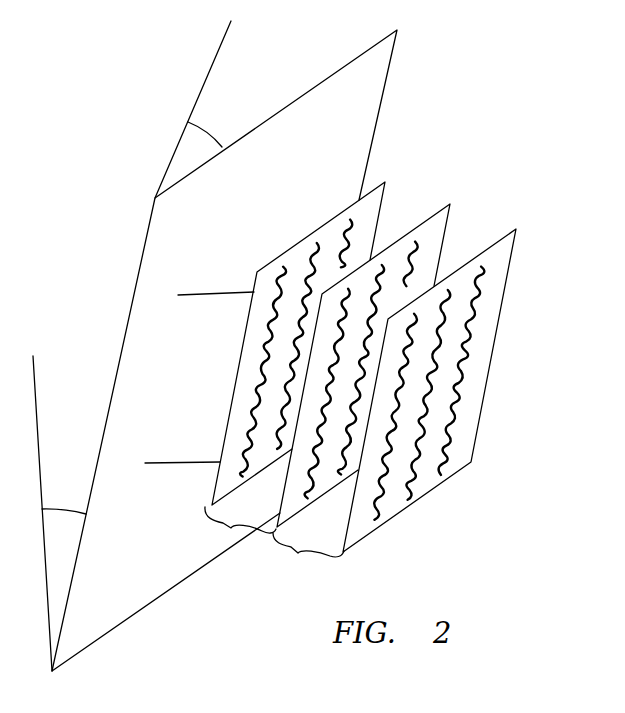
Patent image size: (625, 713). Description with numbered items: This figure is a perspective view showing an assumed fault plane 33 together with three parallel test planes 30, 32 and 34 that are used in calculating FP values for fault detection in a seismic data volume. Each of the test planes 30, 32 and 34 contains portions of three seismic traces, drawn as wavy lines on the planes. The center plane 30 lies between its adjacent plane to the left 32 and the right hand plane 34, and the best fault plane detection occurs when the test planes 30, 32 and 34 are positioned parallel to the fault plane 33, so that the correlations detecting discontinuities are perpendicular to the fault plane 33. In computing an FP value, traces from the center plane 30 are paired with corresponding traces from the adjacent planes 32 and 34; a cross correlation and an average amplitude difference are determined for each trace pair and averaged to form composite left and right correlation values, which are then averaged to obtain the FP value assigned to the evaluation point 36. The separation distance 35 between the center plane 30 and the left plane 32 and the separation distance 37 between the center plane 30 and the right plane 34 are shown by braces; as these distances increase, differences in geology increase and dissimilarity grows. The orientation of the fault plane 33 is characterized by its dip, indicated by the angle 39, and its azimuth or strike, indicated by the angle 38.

The center test plane 30 is at (394, 359).
The left test plane 32 is at (384, 196).
The fault plane 33 is at (390, 68).
The right test plane 34 is at (517, 238).
The separation distance between center and left test planes 35 is at (235, 531).
The evaluation point 36 is at (358, 365).
The separation distance between center and right test planes 37 is at (305, 556).
The azimuth angle 38 is at (212, 130).
The dip angle 39 is at (63, 509).